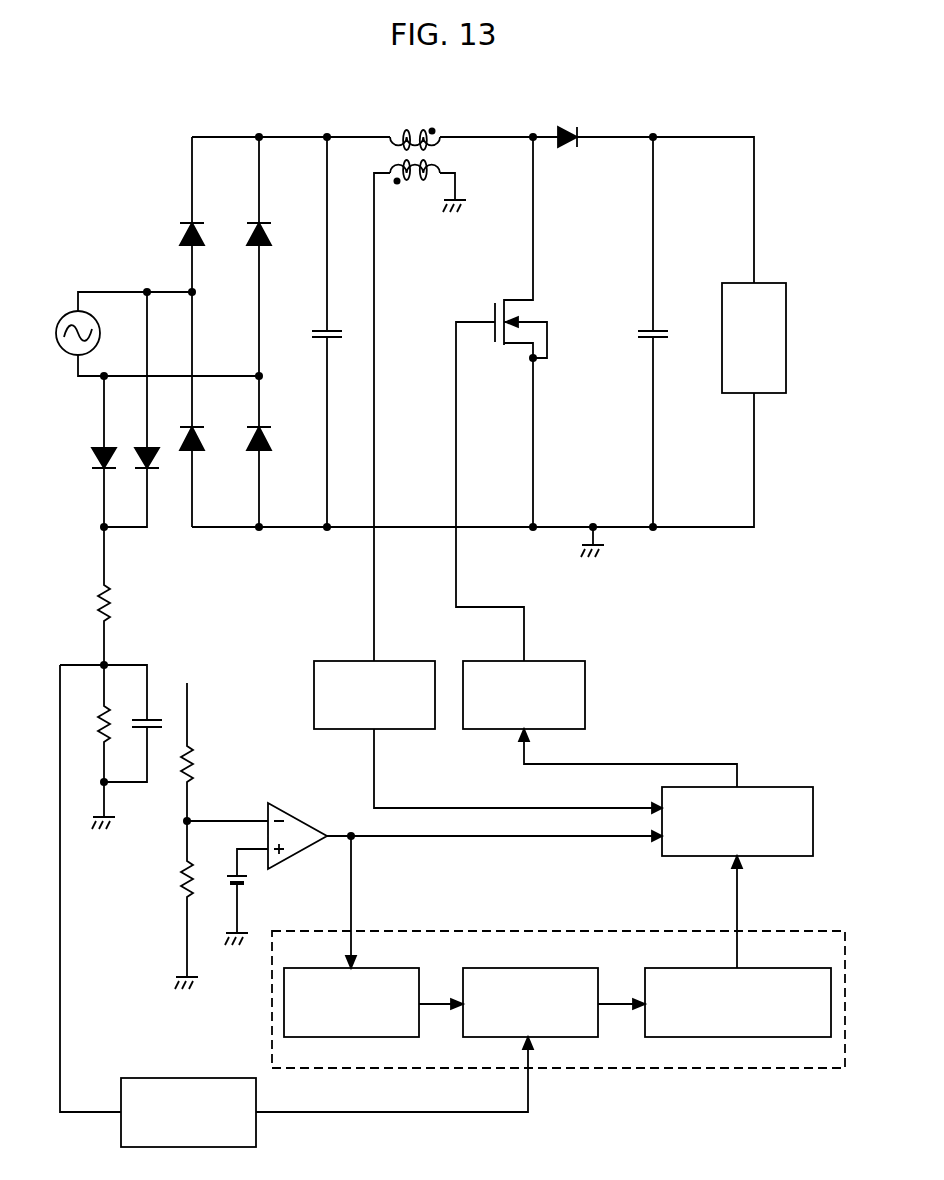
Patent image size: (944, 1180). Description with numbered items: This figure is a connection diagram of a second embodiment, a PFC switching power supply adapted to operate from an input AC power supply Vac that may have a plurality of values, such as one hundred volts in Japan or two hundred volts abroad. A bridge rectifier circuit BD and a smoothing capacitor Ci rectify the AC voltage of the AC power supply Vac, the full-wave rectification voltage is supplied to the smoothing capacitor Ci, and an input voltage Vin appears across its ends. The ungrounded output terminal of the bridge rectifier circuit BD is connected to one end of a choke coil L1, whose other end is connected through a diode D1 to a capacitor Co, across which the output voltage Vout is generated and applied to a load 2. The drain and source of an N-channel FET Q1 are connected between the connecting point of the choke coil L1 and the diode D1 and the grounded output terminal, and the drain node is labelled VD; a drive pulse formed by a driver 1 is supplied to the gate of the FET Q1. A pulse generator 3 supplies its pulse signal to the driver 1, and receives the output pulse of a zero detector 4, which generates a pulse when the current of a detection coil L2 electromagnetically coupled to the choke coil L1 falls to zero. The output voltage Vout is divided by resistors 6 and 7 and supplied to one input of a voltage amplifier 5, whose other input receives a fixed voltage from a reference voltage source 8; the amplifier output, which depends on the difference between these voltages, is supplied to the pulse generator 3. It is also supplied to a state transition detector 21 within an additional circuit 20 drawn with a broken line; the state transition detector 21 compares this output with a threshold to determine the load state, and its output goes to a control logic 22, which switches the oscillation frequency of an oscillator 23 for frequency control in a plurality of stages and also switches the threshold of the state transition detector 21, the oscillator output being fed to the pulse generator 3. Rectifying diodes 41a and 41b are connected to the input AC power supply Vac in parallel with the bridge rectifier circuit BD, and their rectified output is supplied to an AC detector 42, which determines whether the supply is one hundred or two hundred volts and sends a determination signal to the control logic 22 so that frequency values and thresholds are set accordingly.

The driver 1 is at (548, 661).
The load 2 is at (736, 282).
The pulse generator 3 is at (772, 787).
The zero detector 4 is at (398, 661).
The voltage amplifier 5 is at (286, 812).
The resistor 6 is at (190, 744).
The resistor 7 is at (178, 868).
The reference voltage source 8 is at (250, 884).
The additional circuit 20 is at (536, 931).
The state transition detector 21 is at (372, 968).
The control logic 22 is at (552, 968).
The oscillator for frequency control 23 is at (776, 968).
The rectifying diode 41a is at (100, 447).
The rectifying diode 41b is at (144, 447).
The AC detector 42 is at (192, 1078).
The bridge rectifier circuit BD is at (222, 138).
The AC power supply Vac is at (72, 311).
The smoothing capacitor Ci is at (318, 329).
The capacitor Co is at (645, 330).
The choke coil L1 is at (412, 128).
The detection coil L2 is at (408, 192).
The N-channel FET Q1 is at (497, 300).
The diode D1 is at (562, 128).
The input voltage Vin is at (327, 135).
The drain voltage VD is at (532, 134).
The output voltage Vout is at (679, 124).